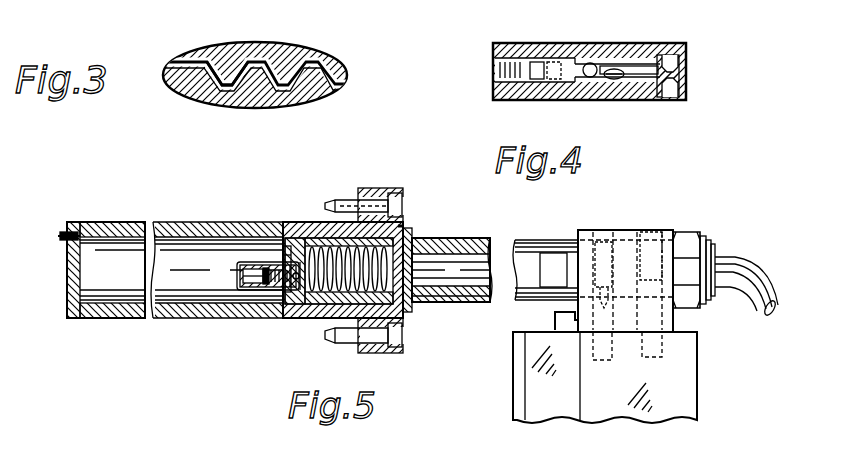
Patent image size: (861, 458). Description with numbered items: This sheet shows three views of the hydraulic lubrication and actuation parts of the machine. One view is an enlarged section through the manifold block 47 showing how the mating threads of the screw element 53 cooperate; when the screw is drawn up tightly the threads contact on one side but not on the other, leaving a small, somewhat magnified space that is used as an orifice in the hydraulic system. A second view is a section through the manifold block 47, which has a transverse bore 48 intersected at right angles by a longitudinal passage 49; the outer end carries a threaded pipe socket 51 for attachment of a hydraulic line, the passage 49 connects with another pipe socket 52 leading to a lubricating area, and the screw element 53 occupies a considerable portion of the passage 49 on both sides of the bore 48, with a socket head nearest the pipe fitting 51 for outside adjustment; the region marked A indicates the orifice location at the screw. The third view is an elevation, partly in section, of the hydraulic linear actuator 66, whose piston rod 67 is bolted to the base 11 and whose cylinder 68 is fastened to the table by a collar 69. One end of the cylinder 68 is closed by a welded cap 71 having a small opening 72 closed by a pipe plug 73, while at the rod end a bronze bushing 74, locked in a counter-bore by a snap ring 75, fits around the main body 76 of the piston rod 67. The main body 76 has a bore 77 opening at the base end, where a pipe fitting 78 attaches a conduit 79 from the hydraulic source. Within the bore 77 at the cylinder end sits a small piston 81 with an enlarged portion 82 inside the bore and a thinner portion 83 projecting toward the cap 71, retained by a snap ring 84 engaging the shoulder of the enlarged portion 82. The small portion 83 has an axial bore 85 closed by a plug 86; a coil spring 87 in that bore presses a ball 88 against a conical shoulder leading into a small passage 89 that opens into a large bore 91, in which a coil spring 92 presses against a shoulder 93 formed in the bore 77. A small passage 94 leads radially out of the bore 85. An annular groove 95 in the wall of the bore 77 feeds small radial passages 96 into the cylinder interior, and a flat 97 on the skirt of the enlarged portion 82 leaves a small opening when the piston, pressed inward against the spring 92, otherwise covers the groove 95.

In FIG. 5, the base 11 is at (682, 396).
In FIG. 3, the manifold block 47 is at (312, 112).
In FIG. 4, the manifold block 47 is at (536, 58).
In FIG. 4, the transverse bore 48 is at (593, 64).
In FIG. 4, the longitudinal passage 49 is at (559, 66).
In FIG. 4, the threaded pipe socket 51 is at (503, 64).
In FIG. 4, the pipe socket 52 is at (667, 98).
In FIG. 3, the screw element 53 is at (281, 57).
In FIG. 4, the screw element 53 is at (566, 82).
In FIG. 4, the orifice element A is at (614, 82).
In FIG. 5, the hydraulic linear actuator 66 is at (505, 240).
In FIG. 5, the piston rod 67 is at (549, 252).
In FIG. 5, the cylinder 68 is at (170, 228).
In FIG. 5, the collar 69 is at (363, 189).
In FIG. 5, the cap 71 is at (70, 296).
In FIG. 5, the small opening 72 is at (70, 231).
In FIG. 5, the pipe plug 73 is at (62, 240).
In FIG. 5, the bronze bushing 74 is at (385, 199).
In FIG. 5, the snap ring 75 is at (412, 240).
In FIG. 5, the main body of the piston rod 76 is at (452, 302).
In FIG. 5, the bore 77 is at (466, 240).
In FIG. 5, the pipe fitting 78 is at (708, 240).
In FIG. 5, the conduit 79 is at (748, 262).
In FIG. 5, the small piston 81 is at (240, 292).
In FIG. 5, the enlarged portion 82 is at (283, 242).
In FIG. 5, the thinner portion 83 is at (272, 262).
In FIG. 5, the snap ring 84 is at (284, 252).
In FIG. 5, the bore 85 is at (265, 292).
In FIG. 5, the plug 86 is at (242, 272).
In FIG. 5, the coil spring 87 is at (244, 281).
In FIG. 5, the ball 88 is at (287, 295).
In FIG. 5, the small passage 89 is at (300, 306).
In FIG. 5, the large bore 91 is at (298, 238).
In FIG. 5, the coil spring 92 is at (293, 245).
In FIG. 5, the shoulder 93 is at (405, 226).
In FIG. 5, the small passage 94 is at (278, 300).
In FIG. 5, the annular groove 95 is at (335, 336).
In FIG. 5, the radial passages 96 is at (345, 248).
In FIG. 5, the flat 97 is at (320, 236).